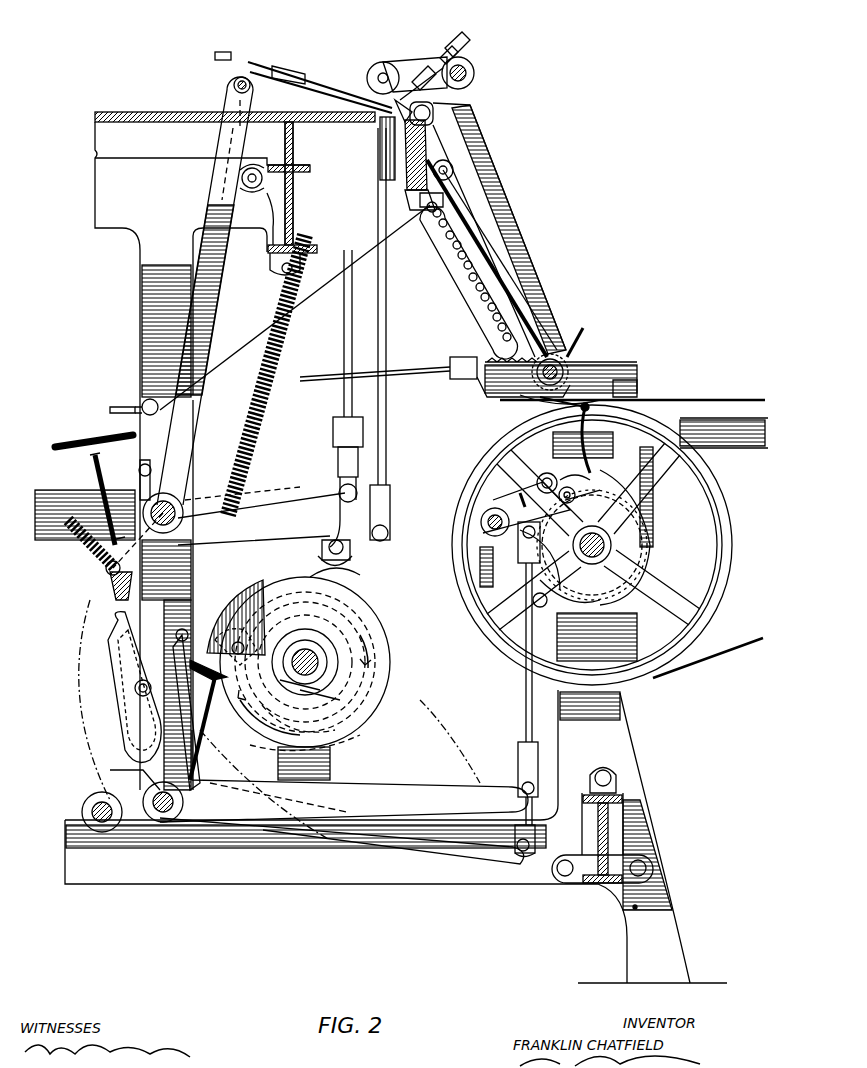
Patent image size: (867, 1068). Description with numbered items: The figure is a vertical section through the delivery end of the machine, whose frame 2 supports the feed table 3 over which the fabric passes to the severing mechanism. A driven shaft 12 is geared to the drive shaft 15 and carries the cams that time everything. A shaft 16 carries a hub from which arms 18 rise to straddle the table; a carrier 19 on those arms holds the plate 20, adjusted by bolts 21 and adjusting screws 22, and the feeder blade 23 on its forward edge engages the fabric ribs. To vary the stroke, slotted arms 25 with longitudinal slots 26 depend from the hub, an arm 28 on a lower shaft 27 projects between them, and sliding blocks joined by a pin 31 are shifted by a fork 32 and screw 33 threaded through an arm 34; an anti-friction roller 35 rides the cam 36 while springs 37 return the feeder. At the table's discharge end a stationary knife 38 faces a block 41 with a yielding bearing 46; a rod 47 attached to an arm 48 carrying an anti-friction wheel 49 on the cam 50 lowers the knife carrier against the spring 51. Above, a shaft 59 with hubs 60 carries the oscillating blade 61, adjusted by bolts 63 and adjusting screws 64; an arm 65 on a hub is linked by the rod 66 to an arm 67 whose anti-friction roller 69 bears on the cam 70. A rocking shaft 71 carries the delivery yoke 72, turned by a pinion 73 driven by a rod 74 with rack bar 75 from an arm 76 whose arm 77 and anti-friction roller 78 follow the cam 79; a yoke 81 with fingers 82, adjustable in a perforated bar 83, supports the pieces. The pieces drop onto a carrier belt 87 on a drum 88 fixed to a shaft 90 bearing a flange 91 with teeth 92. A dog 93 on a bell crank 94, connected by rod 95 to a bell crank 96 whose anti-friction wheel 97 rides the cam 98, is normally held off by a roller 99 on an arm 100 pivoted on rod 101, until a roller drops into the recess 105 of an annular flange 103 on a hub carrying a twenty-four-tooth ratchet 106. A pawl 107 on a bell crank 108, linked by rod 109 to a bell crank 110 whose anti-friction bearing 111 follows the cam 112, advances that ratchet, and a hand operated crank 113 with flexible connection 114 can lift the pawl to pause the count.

The frame 2 is at (100, 175).
The feed table 3 is at (95, 121).
The driven shaft 12 is at (318, 662).
The drive shaft 15 is at (100, 823).
The shaft 16 is at (108, 566).
The arms 18 is at (230, 98).
The carrier 19 is at (278, 70).
The plate 20 is at (300, 60).
The bolts 21 is at (290, 68).
The adjusting screws 22 is at (222, 55).
The feeder blade 23 is at (386, 110).
The arms 25 is at (105, 603).
The longitudinal slots 26 is at (157, 666).
The shaft 27 is at (155, 813).
The arm 28 is at (143, 770).
The pin 31 is at (140, 688).
The fork 32 is at (112, 583).
The screw 33 is at (90, 441).
The arm 34 is at (100, 478).
The anti-friction roller 35 is at (195, 640).
The cam 36 is at (240, 625).
The springs 37 is at (285, 300).
The stationary knife 38 is at (440, 175).
The block 41 is at (395, 102).
The yielding bearing 46 is at (428, 133).
The rod 47 is at (355, 338).
The arm 48 is at (350, 552).
The anti-friction wheel 49 is at (352, 565).
The cam 50 is at (340, 675).
The spring 51 is at (78, 533).
The shaft 59 is at (474, 77).
The hubs 60 is at (445, 54).
The oscillating blade 61 is at (434, 112).
The bolts 63 is at (420, 75).
The adjusting screws 64 is at (452, 42).
The arm 65 is at (400, 70).
The rod 66 is at (388, 343).
The arm 67 is at (386, 543).
The anti-friction roller 69 is at (245, 585).
The cam 70 is at (340, 735).
The shaft 71 is at (575, 350).
The yoke 72 is at (470, 138).
The pinion 73 is at (565, 380).
The rod 74 is at (400, 374).
The rack bar 75 is at (480, 390).
The arm 76 is at (150, 413).
The arm 77 is at (300, 540).
The anti-friction roller 78 is at (355, 580).
The cam 79 is at (372, 695).
The yoke 81 is at (443, 200).
The fingers 82 is at (453, 172).
The perforated bar 83 is at (437, 212).
The carrier belt 87 is at (650, 423).
The drum 88 is at (640, 413).
The shaft 90 is at (645, 533).
The annular flange 91 is at (690, 638).
The teeth 92 is at (700, 660).
The dog 93 is at (558, 492).
The bell crank 94 is at (537, 483).
The rod 95 is at (520, 813).
The bell crank 96 is at (490, 853).
The anti-friction wheel 97 is at (160, 725).
The cam 98 is at (330, 700).
The roller 99 is at (530, 488).
The arm 100 is at (482, 514).
The rod 101 is at (488, 524).
The annular flange 103 is at (520, 575).
The recess 105 is at (545, 610).
The ratchet 106 is at (648, 547).
The pawl 107 is at (660, 440).
The bell crank 108 is at (665, 460).
The rod 109 is at (530, 605).
The bell crank 110 is at (398, 795).
The pin 111 is at (138, 690).
The cam 112 is at (300, 700).
The hand operated crank 113 is at (583, 338).
The flexible connection 114 is at (520, 414).